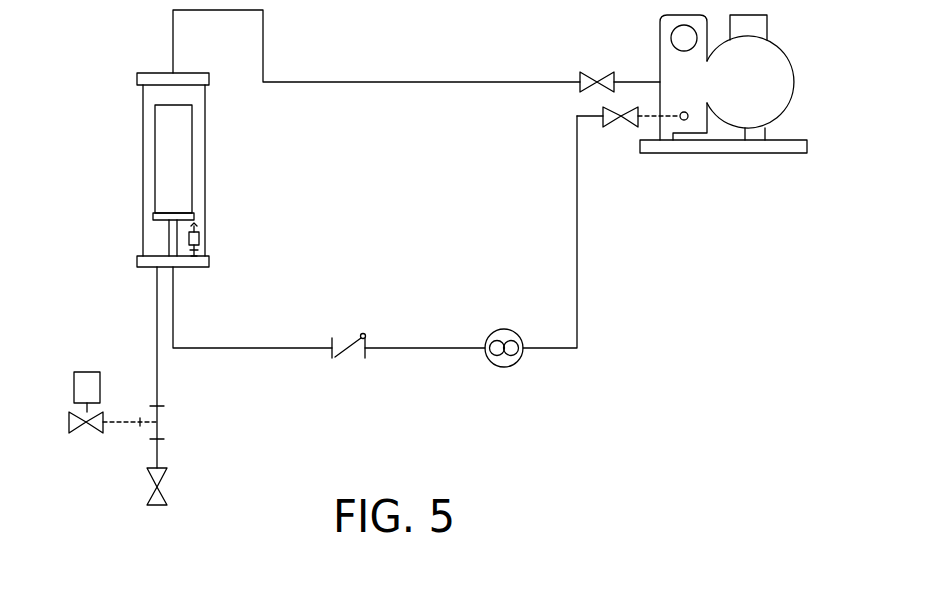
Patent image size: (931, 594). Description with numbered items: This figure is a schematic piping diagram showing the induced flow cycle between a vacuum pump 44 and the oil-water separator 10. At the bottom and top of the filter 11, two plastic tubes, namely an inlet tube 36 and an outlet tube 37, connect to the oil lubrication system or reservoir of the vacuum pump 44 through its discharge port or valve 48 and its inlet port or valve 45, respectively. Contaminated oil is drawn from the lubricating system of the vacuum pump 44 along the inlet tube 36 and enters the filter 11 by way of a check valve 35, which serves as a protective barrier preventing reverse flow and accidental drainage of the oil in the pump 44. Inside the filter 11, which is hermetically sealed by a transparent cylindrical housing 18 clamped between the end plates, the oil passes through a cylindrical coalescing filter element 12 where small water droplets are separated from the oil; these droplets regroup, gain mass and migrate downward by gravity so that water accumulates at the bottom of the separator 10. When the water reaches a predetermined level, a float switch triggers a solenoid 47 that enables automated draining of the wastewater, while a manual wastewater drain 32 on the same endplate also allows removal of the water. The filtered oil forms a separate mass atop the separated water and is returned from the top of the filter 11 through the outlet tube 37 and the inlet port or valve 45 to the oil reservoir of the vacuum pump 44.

The oil-water separator 10 is at (607, 277).
The filter 11 is at (182, 171).
The coalescing filter element 12 is at (170, 191).
The transparent cylindrical housing 18 is at (137, 262).
The wastewater drain 32 is at (165, 490).
The check valve 35 is at (350, 353).
The inlet tube 36 is at (240, 347).
The outlet tube 37 is at (379, 81).
The vacuum pump 44 is at (768, 73).
The inlet port or valve 45 is at (597, 75).
The solenoid 47 is at (80, 434).
The discharge port or valve 48 is at (621, 128).